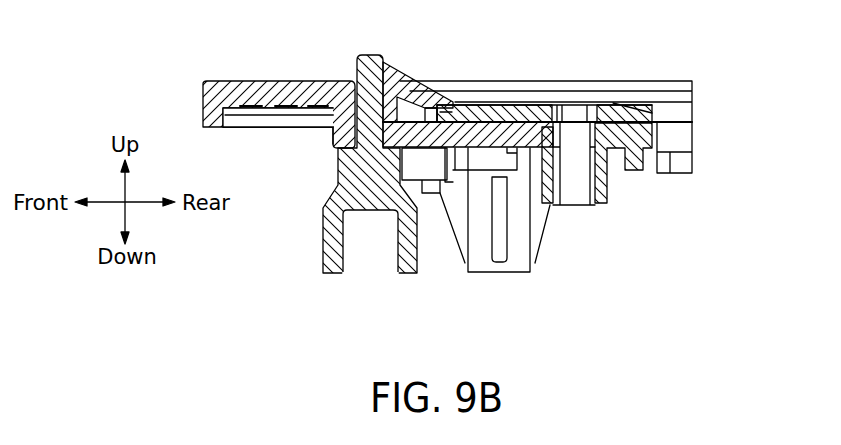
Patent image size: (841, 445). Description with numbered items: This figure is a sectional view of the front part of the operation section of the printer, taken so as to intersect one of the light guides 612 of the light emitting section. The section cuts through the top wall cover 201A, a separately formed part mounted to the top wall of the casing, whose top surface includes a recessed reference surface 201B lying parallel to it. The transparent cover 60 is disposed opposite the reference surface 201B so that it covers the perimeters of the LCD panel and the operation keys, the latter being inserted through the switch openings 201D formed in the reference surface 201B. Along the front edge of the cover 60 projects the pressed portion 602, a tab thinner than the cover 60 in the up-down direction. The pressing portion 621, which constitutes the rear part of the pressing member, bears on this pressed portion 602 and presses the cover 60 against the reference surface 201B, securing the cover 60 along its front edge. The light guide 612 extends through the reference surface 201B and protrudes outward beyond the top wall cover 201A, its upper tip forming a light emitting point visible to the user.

The top wall cover 201A is at (275, 80).
The reference surface 201B is at (483, 140).
The switch openings 201D is at (576, 193).
The cover 60 is at (610, 107).
The pressed portion 602 is at (483, 107).
The light guide 612 is at (323, 238).
The pressing portion 621 is at (448, 102).